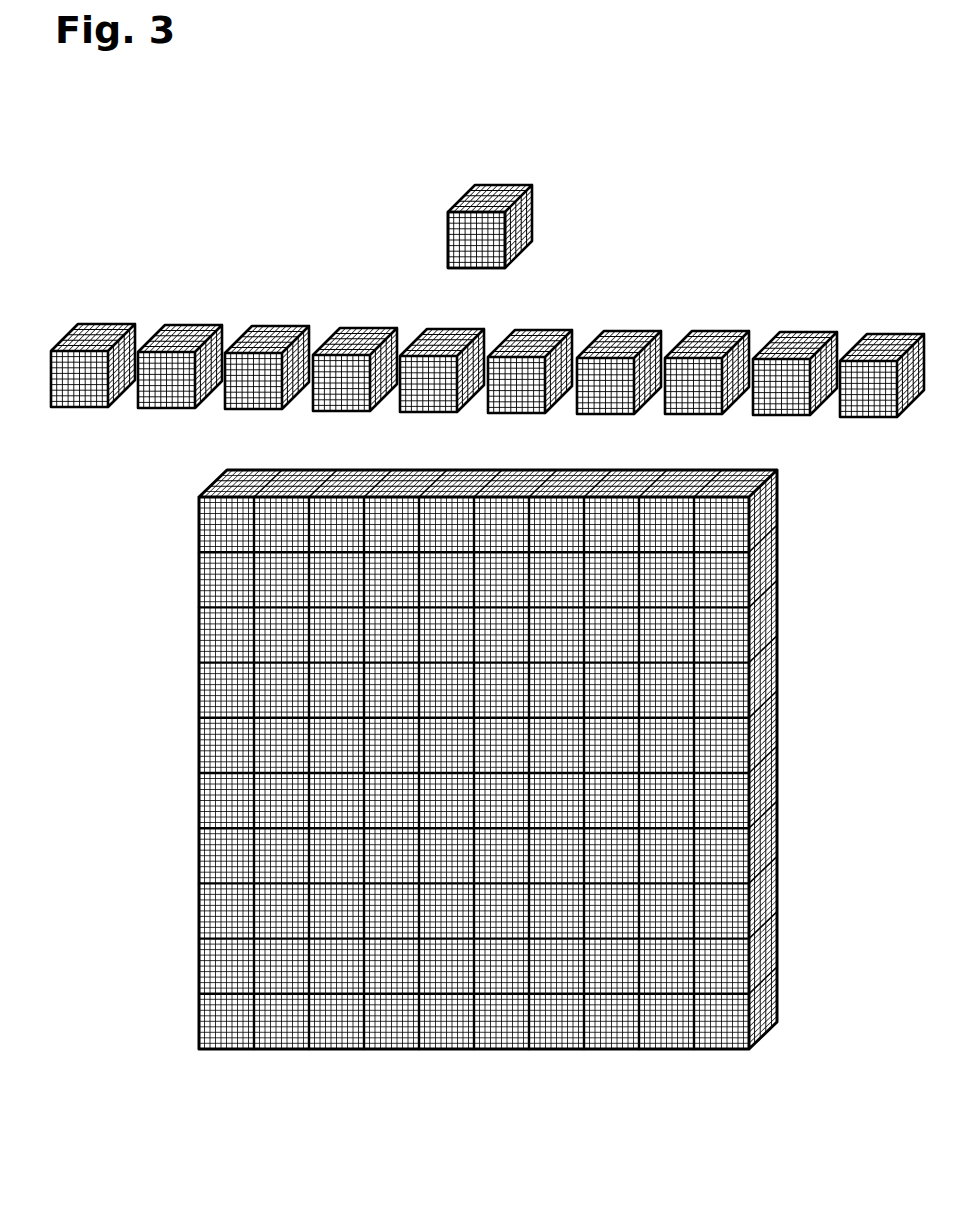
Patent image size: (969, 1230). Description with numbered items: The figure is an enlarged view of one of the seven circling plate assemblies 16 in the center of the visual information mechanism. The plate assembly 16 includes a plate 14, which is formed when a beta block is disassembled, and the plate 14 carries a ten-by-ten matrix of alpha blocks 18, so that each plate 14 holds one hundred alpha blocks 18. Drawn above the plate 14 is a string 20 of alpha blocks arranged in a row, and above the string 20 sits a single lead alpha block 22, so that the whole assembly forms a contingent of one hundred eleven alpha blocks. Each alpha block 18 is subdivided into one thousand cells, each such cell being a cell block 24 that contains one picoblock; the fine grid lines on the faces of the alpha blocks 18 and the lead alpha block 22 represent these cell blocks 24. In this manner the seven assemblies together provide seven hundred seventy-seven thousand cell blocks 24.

The plate 14 is at (190, 528).
The plate assembly 16 is at (283, 250).
The alpha block 18 is at (268, 322).
The string of alpha blocks 20 is at (93, 313).
The lead alpha block 22 is at (538, 203).
The cell block 24 is at (448, 227).